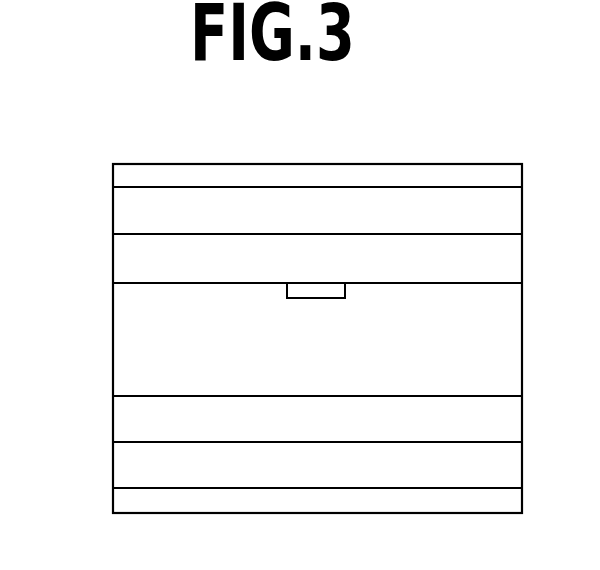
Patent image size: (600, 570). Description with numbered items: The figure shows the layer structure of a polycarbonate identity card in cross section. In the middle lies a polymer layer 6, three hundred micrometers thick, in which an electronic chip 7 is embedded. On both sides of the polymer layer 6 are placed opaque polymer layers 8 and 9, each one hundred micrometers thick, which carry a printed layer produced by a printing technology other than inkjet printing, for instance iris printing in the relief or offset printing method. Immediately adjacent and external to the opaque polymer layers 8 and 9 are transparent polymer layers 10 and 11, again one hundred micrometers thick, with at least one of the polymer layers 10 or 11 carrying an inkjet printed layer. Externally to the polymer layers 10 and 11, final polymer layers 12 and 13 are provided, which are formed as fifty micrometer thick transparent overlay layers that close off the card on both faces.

The polymer layer 6 is at (137, 337).
The electronic chip 7 is at (315, 287).
The opaque polymer layer 8 is at (125, 257).
The opaque polymer layer 9 is at (130, 420).
The transparent polymer layer 10 is at (125, 213).
The transparent polymer layer 11 is at (125, 465).
The transparent overlay layer 12 is at (125, 176).
The transparent overlay layer 13 is at (127, 496).